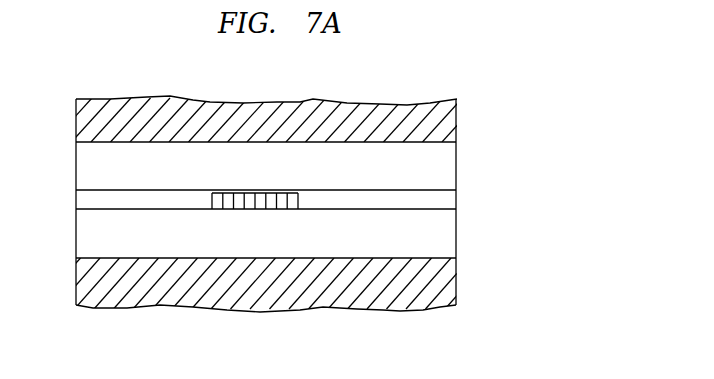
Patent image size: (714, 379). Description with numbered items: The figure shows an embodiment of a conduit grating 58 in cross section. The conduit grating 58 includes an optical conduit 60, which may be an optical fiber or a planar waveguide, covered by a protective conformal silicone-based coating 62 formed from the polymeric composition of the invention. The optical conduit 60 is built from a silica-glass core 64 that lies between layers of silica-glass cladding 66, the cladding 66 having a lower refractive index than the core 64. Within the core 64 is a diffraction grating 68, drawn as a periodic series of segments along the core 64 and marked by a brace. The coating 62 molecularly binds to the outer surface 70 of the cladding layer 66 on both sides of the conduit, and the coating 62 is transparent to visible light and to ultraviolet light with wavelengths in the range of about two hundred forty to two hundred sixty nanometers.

The conduit grating 58 is at (529, 102).
The optical conduit 60 is at (471, 147).
The protective conformal silicone-based coating 62 is at (197, 99).
The silica-glass core 64 is at (76, 198).
The silica-glass cladding 66 is at (76, 168).
The diffraction grating 68 is at (210, 181).
The outer surface 70 is at (432, 145).